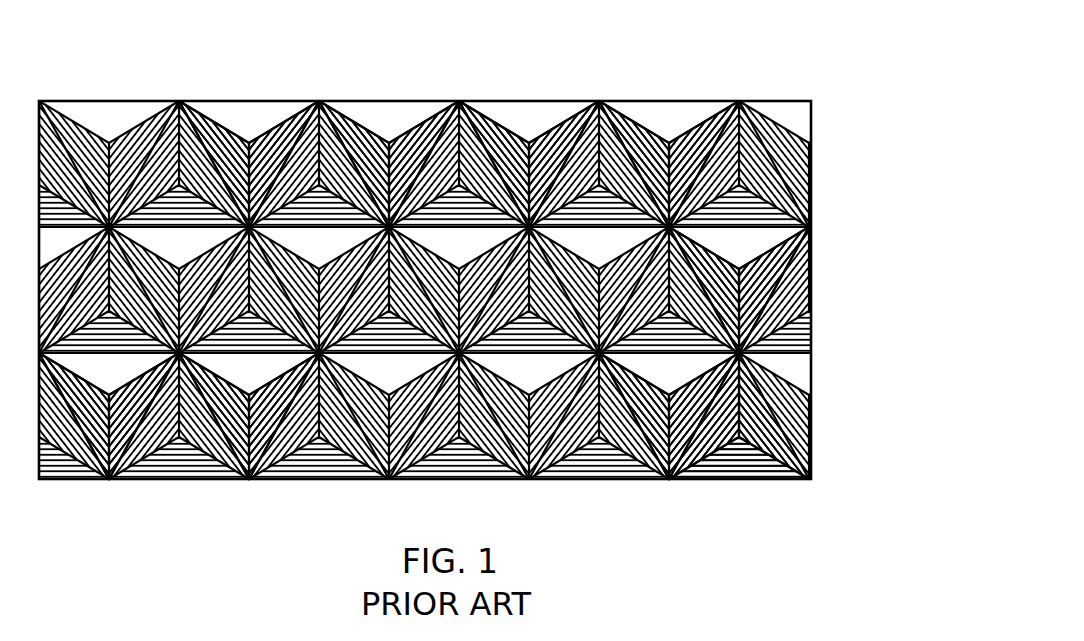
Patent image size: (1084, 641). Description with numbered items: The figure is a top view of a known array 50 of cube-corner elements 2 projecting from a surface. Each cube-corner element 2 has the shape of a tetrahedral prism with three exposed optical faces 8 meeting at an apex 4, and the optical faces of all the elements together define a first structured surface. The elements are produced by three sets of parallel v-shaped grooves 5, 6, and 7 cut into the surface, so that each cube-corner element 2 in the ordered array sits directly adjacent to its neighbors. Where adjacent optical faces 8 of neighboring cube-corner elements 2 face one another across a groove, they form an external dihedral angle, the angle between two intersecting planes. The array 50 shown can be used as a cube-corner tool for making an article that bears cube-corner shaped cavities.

The array 50 is at (474, 279).
The cube-corner element 2 is at (388, 112).
The apex 4 is at (670, 140).
The v-shaped grooves 5 is at (762, 330).
The v-shaped grooves 6 is at (760, 423).
The v-shaped grooves 7 is at (277, 422).
The optical faces 8 is at (268, 145).